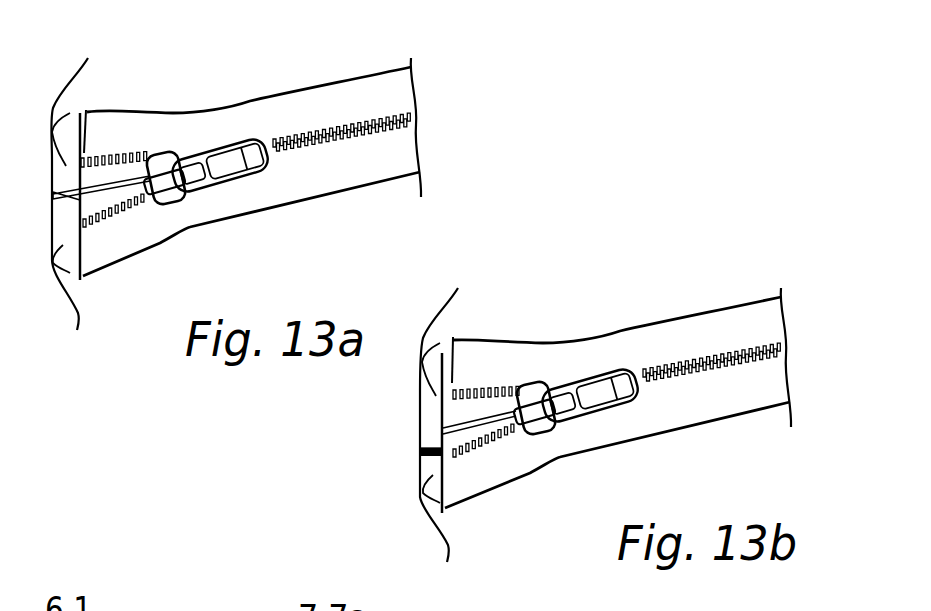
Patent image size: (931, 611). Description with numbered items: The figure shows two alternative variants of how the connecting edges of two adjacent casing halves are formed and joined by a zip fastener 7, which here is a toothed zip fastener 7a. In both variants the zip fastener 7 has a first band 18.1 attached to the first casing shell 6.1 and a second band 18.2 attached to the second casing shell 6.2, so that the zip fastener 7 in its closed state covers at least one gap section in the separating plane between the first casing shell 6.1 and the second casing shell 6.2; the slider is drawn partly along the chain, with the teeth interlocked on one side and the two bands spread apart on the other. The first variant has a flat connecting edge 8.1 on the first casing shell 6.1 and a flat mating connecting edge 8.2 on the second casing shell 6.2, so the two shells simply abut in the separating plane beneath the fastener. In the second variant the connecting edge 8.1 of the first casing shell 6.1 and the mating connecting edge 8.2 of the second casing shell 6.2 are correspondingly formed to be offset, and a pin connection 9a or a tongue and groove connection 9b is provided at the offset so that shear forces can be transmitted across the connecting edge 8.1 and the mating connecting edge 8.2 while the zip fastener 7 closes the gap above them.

In FIG. 13A, the first casing shell 6.1 is at (73, 102).
In FIG. 13B, the first casing shell 6.1 is at (443, 332).
In FIG. 13A, the second casing shell 6.2 is at (43, 280).
In FIG. 13B, the second casing shell 6.2 is at (413, 510).
In FIG. 13A, the zip fastener 7 is at (344, 96).
In FIG. 13B, the zip fastener 7 is at (711, 304).
In FIG. 13A, the toothed zip fastener 7a is at (274, 103).
In FIG. 13B, the toothed zip fastener 7a is at (644, 333).
In FIG. 13A, the connecting edge 8.1 is at (245, 116).
In FIG. 13B, the connecting edge 8.1 is at (611, 348).
In FIG. 13A, the mating connecting edge 8.2 is at (236, 280).
In FIG. 13B, the mating connecting edge 8.2 is at (616, 506).
In FIG. 13B, the pin connection 9a is at (387, 442).
In FIG. 13B, the tongue and groove connection 9b is at (374, 453).
In FIG. 13A, the first band 18.1 is at (398, 97).
In FIG. 13B, the first band 18.1 is at (820, 321).
In FIG. 13A, the second band 18.2 is at (402, 167).
In FIG. 13B, the second band 18.2 is at (829, 391).